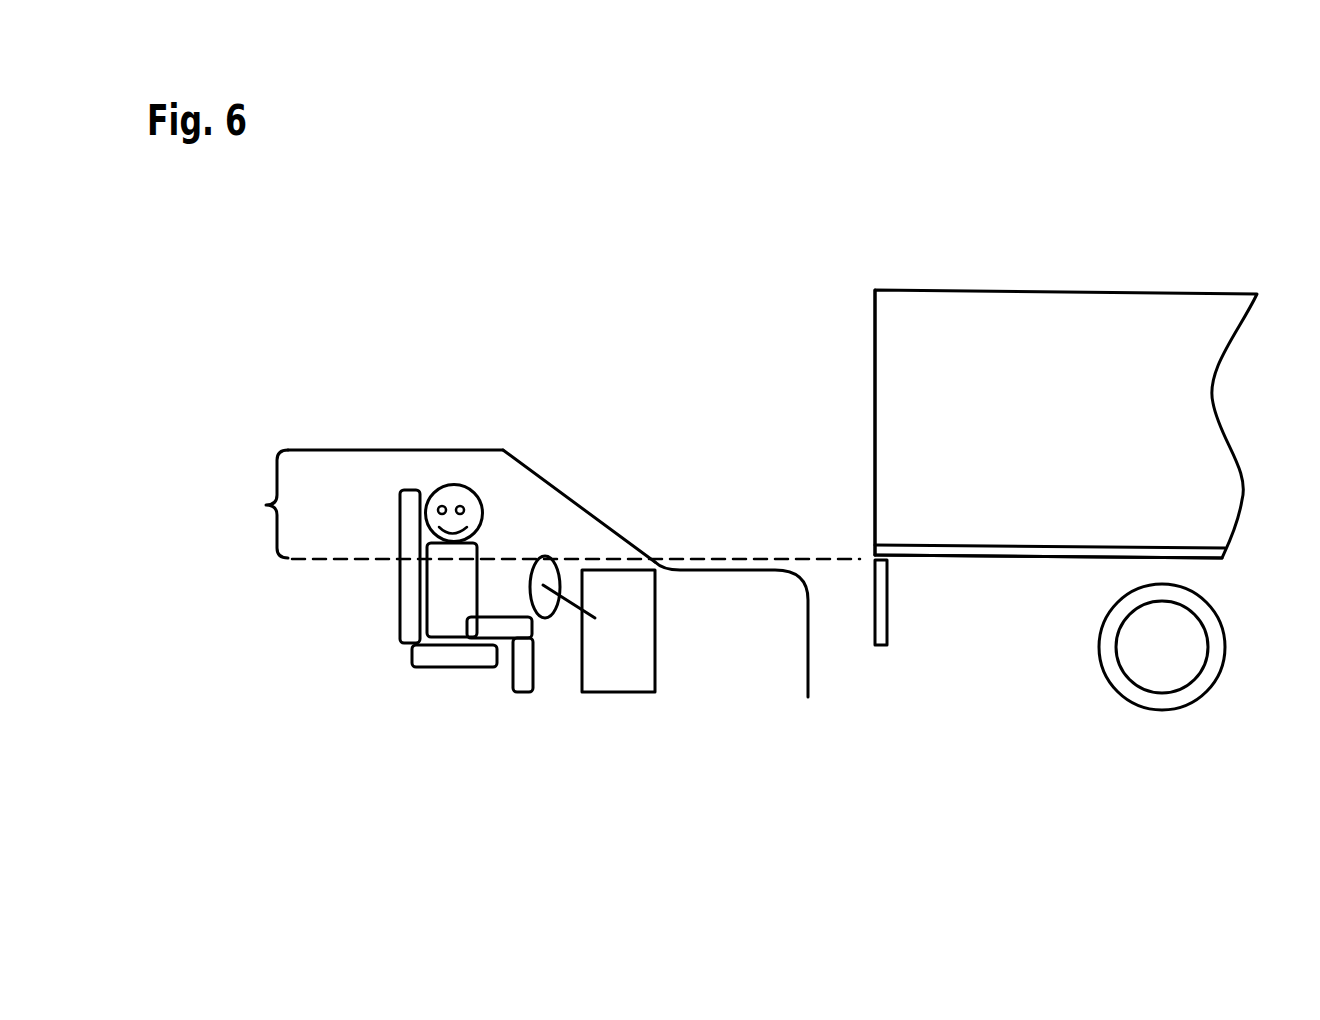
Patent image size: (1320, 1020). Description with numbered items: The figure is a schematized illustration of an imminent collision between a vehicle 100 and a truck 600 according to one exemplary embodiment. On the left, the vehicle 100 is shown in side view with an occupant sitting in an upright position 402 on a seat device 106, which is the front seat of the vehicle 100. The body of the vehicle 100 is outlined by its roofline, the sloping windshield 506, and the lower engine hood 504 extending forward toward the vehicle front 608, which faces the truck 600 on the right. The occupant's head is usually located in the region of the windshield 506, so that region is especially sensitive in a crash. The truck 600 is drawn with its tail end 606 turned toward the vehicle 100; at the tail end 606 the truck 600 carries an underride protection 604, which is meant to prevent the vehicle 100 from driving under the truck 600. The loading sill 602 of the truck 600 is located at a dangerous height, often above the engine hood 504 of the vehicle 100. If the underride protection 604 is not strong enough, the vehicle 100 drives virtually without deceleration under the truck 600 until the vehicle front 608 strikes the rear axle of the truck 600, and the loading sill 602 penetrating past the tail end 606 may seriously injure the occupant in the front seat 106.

The vehicle 100 is at (508, 450).
The seat device 106 is at (450, 667).
The upright position 402 is at (443, 400).
The engine hood 504 is at (742, 567).
The windshield 506 is at (588, 508).
The truck 600 is at (1068, 288).
The loading sill 602 is at (1037, 556).
The underride protection 604 is at (887, 593).
The tail end 606 is at (924, 268).
The vehicle front 608 is at (690, 384).